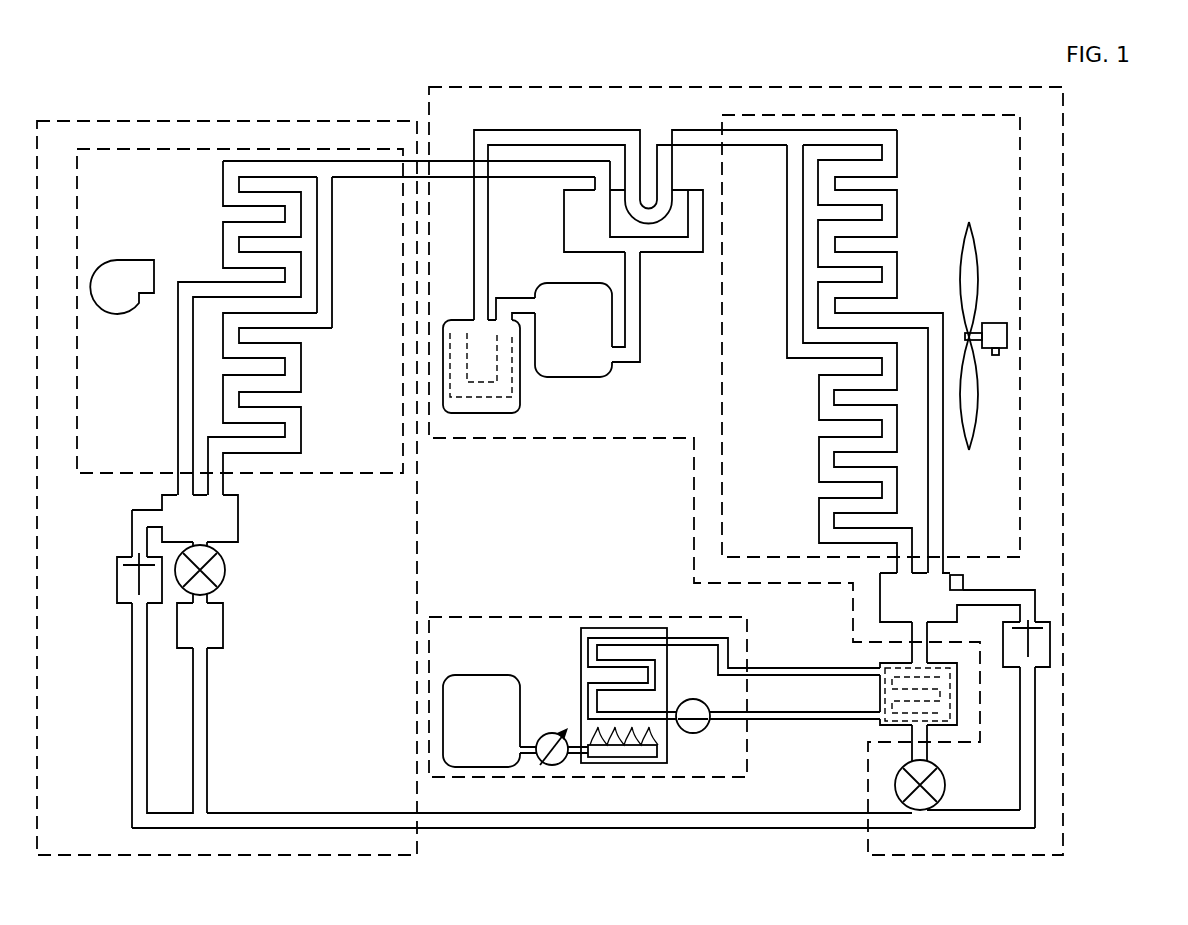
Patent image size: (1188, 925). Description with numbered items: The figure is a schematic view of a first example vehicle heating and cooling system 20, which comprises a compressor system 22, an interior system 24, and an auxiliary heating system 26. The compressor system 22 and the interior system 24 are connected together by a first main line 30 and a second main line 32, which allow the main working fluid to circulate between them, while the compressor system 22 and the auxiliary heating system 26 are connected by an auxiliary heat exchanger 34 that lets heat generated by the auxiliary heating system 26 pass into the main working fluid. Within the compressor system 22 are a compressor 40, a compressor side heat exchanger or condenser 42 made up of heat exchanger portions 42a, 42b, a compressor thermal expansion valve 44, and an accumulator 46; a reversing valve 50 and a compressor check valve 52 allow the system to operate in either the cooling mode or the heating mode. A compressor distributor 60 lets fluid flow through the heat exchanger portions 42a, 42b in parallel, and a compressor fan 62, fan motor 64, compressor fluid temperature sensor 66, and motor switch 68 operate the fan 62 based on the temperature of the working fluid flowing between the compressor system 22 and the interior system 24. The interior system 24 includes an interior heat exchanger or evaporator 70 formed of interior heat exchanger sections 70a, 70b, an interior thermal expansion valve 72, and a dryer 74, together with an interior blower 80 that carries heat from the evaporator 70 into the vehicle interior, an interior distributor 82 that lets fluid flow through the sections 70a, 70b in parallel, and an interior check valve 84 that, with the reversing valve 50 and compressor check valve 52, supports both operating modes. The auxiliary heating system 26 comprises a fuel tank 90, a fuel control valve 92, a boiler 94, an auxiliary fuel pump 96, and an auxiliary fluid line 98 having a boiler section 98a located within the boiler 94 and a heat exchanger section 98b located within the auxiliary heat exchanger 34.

The vehicle heating and cooling system 20 is at (1090, 130).
The compressor system 22 is at (1053, 187).
The interior system 24 is at (210, 125).
The auxiliary heating system 26 is at (495, 620).
The first main line 30 is at (367, 166).
The second main line 32 is at (340, 820).
The auxiliary heat exchanger 34 is at (885, 697).
The compressor 40 is at (573, 368).
The condenser 42 is at (958, 124).
The heat exchanger portion 42a is at (899, 198).
The heat exchanger portion 42b is at (816, 433).
The compressor thermal expansion valve 44 is at (937, 787).
The accumulator 46 is at (503, 405).
The reversing valve 50 is at (572, 213).
The compressor check valve 52 is at (1042, 647).
The compressor distributor 60 is at (892, 603).
The compressor fan 62 is at (968, 276).
The fan motor 64 is at (998, 330).
The compressor fluid temperature sensor 66 is at (963, 583).
The motor switch 68 is at (997, 355).
The evaporator 70 is at (135, 155).
The interior heat exchanger section 70a is at (216, 204).
The interior heat exchanger section 70b is at (307, 378).
The interior thermal expansion valve 72 is at (218, 577).
The dryer 74 is at (212, 625).
The interior blower 80 is at (127, 267).
The interior distributor 82 is at (232, 520).
The interior check valve 84 is at (120, 588).
The fuel tank 90 is at (480, 685).
The fuel control valve 92 is at (552, 765).
The boiler 94 is at (615, 630).
The auxiliary fuel pump 96 is at (697, 727).
The auxiliary fluid line 98 is at (693, 638).
The boiler section 98a is at (586, 651).
The heat exchanger section 98b is at (881, 663).